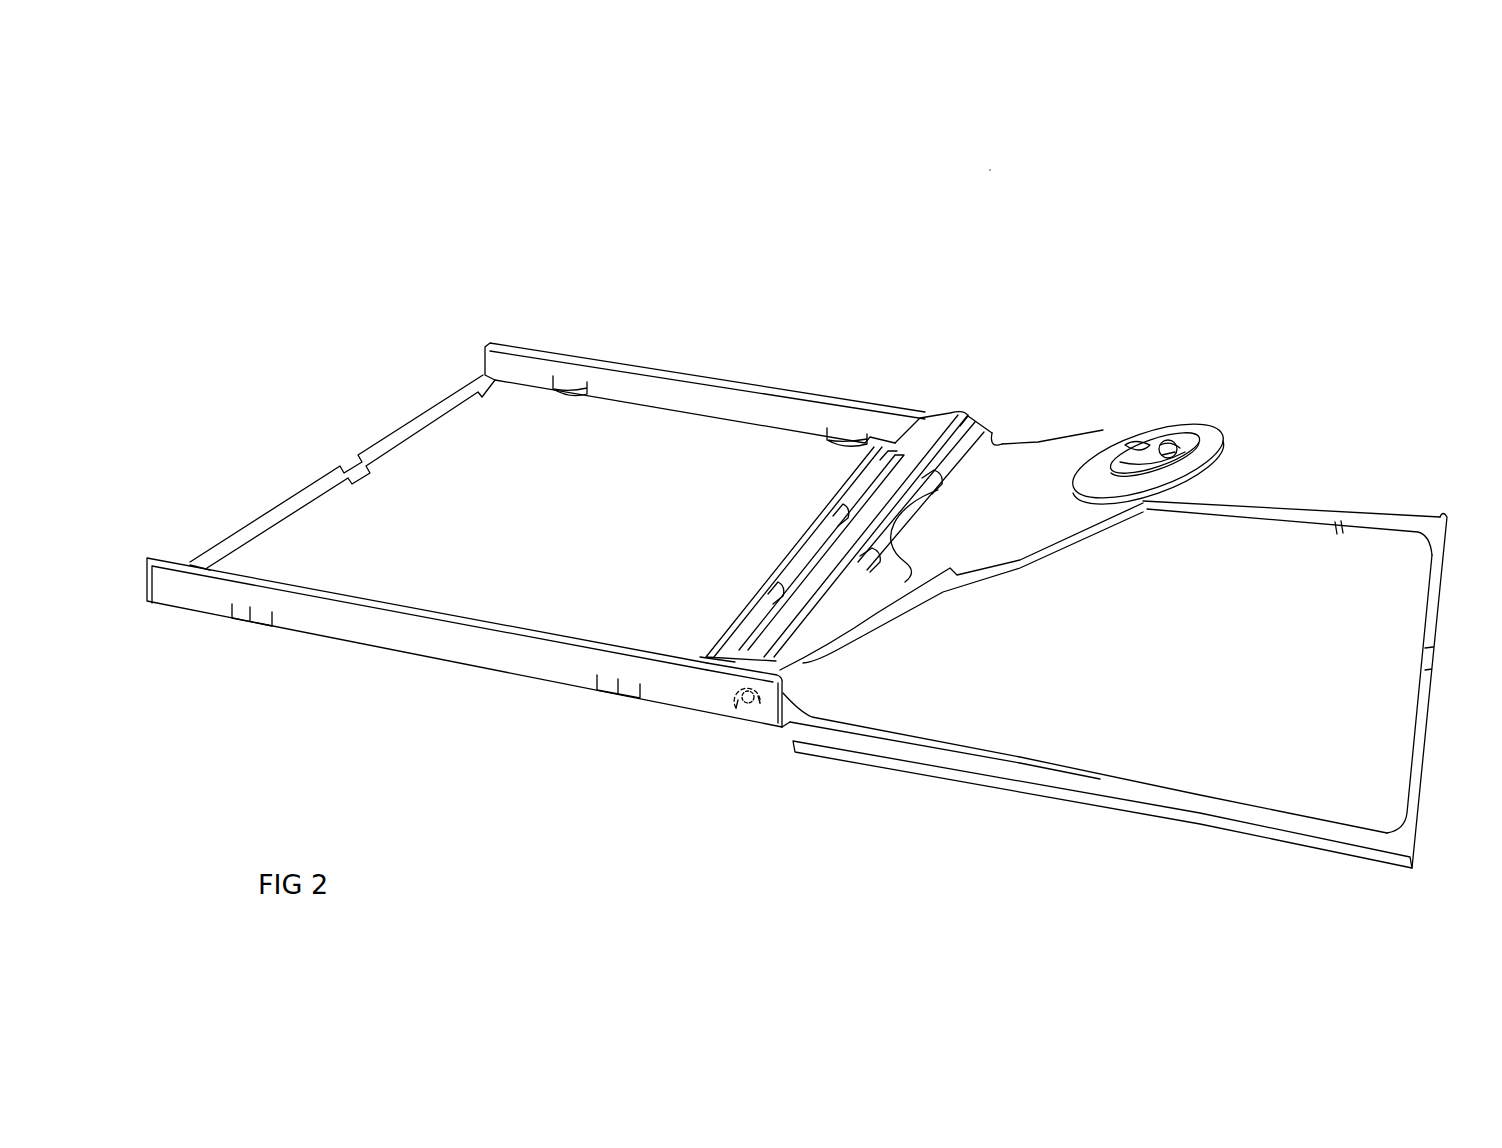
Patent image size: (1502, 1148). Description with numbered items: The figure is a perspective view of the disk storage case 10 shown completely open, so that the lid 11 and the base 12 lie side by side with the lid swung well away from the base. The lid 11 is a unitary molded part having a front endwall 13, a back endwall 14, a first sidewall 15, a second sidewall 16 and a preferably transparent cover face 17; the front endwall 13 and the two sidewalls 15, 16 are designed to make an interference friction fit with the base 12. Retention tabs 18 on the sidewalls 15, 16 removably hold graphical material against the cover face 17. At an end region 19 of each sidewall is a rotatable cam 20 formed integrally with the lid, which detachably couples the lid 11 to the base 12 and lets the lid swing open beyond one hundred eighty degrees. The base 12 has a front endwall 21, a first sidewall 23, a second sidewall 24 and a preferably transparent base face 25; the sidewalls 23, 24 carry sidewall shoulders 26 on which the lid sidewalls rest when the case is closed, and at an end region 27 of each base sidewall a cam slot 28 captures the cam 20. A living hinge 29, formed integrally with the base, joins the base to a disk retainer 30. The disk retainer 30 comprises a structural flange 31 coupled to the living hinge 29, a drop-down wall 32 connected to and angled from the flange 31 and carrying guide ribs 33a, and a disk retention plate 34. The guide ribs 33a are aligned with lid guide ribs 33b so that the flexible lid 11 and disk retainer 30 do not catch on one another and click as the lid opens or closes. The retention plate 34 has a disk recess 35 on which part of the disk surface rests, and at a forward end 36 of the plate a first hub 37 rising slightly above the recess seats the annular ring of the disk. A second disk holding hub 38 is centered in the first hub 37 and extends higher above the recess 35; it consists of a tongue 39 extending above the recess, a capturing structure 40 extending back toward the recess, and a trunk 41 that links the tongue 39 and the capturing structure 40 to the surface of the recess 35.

The disk storage case 10 is at (999, 162).
The lid 11 is at (497, 672).
The base 12 is at (1310, 510).
The front endwall 13 is at (352, 455).
The back endwall 14 is at (748, 610).
The first sidewall 15 is at (395, 640).
The second sidewall 16 is at (685, 388).
The cover face 17 is at (358, 521).
The retention tabs 18 is at (572, 380).
The end region 19 is at (905, 430).
The rotatable cam 20 is at (732, 705).
The front endwall 21 is at (1432, 698).
The first sidewall 23 is at (1175, 790).
The second sidewall 24 is at (1300, 535).
The base face 25 is at (1268, 588).
The sidewall shoulders 26 is at (990, 785).
The end region 27 is at (795, 712).
The cam slot 28 is at (750, 705).
The living hinge 29 is at (735, 660).
The disk retainer 30 is at (1106, 334).
The structural flange 31 is at (882, 480).
The drop-down wall 32 is at (972, 424).
The guide ribs 33a is at (878, 570).
The lid guide ribs 33b is at (836, 505).
The disk retention plate 34 is at (1000, 446).
The disk recess 35 is at (961, 550).
The forward end 36 is at (1222, 445).
The first hub 37 is at (1100, 466).
The second disk holding hub 38 is at (1143, 465).
The tongue 39 is at (1128, 440).
The capturing structure 40 is at (1175, 440).
The trunk 41 is at (1105, 475).